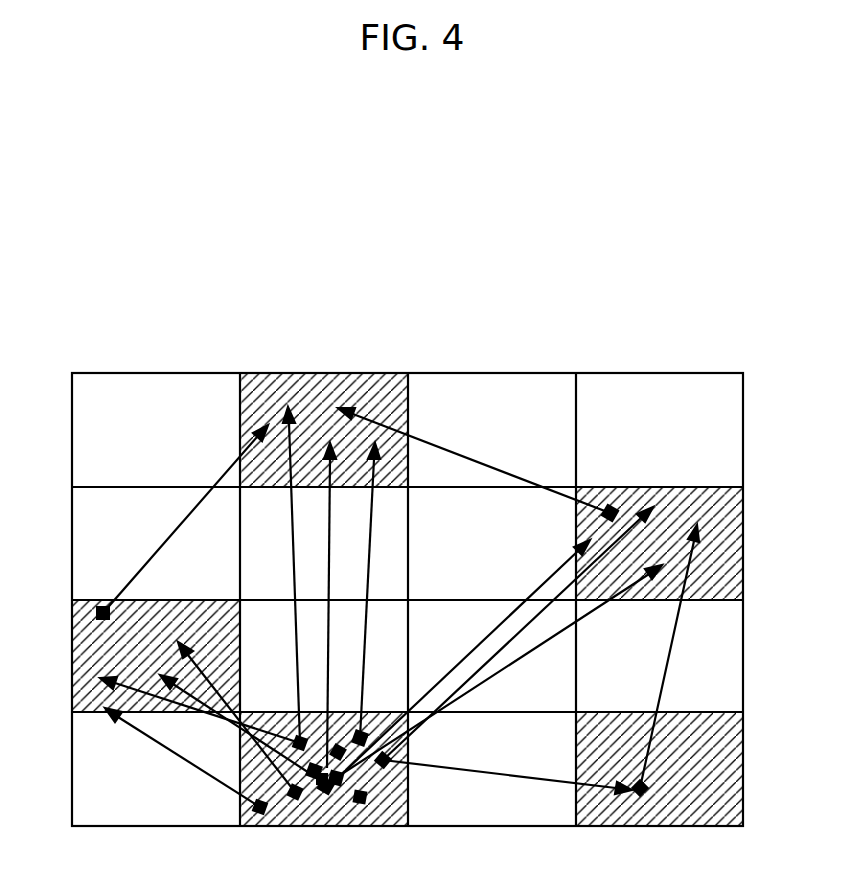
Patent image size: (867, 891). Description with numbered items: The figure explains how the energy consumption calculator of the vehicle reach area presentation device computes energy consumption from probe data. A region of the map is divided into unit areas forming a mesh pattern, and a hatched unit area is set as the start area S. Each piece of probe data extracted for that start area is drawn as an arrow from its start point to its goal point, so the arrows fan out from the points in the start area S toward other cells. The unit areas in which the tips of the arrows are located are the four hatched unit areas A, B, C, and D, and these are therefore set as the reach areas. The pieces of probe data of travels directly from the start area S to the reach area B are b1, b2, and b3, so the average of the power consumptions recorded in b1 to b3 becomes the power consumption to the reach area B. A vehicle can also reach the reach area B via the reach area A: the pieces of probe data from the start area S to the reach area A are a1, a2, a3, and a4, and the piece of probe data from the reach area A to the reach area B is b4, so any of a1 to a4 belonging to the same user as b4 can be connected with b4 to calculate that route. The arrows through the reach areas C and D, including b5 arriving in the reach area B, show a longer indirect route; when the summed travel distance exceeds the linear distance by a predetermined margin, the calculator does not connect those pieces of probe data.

The reach area A is at (72, 662).
The reach area B is at (332, 372).
The reach area C is at (743, 775).
The reach area D is at (743, 552).
The start area S is at (324, 827).
The piece of probe data a1 is at (185, 760).
The piece of probe data a2 is at (280, 778).
The piece of probe data a3 is at (145, 692).
The piece of probe data a4 is at (190, 698).
The piece of probe data b1 is at (295, 622).
The piece of probe data b2 is at (328, 535).
The piece of probe data b3 is at (373, 553).
The piece of probe data b4 is at (162, 546).
The piece of probe data b5 is at (480, 460).